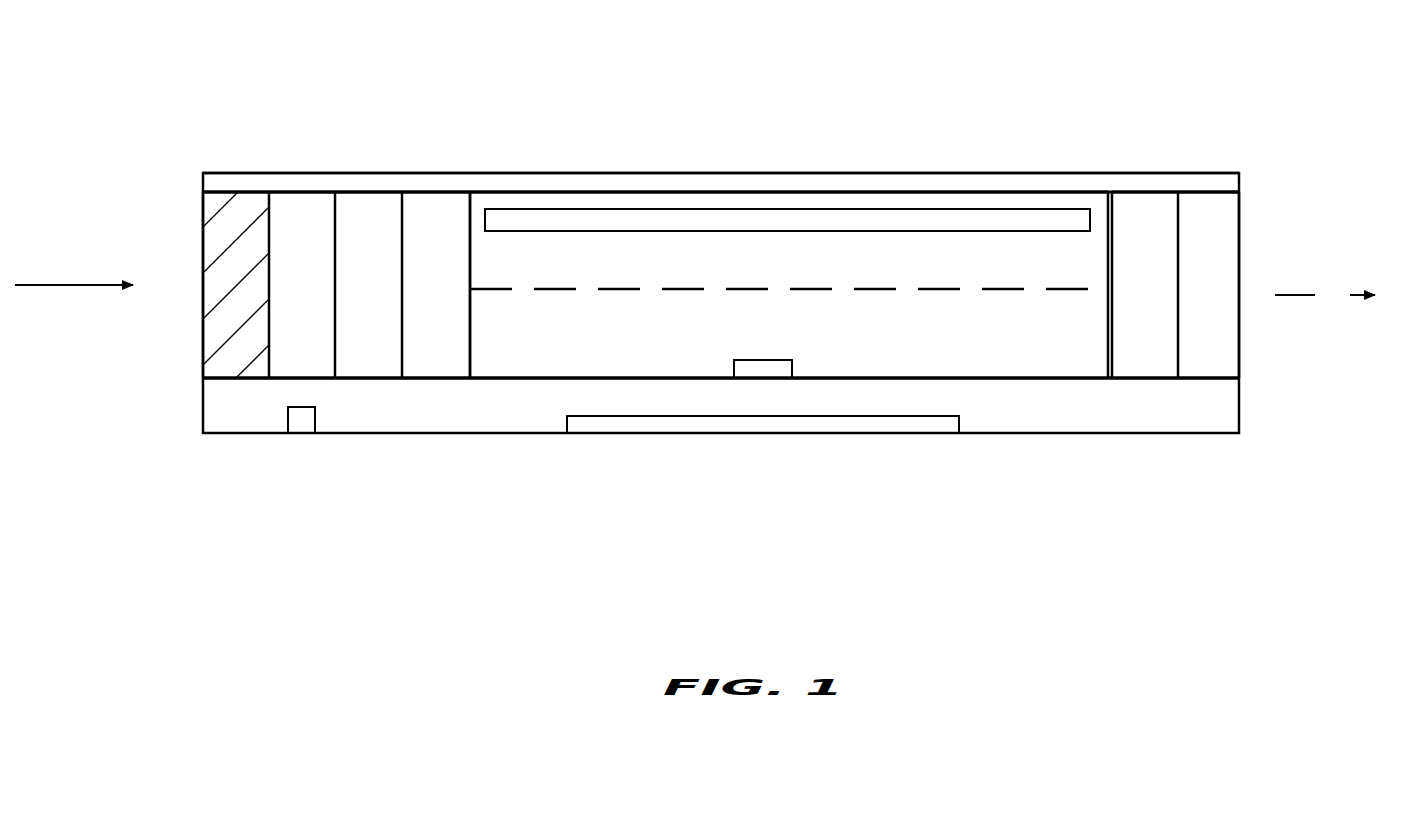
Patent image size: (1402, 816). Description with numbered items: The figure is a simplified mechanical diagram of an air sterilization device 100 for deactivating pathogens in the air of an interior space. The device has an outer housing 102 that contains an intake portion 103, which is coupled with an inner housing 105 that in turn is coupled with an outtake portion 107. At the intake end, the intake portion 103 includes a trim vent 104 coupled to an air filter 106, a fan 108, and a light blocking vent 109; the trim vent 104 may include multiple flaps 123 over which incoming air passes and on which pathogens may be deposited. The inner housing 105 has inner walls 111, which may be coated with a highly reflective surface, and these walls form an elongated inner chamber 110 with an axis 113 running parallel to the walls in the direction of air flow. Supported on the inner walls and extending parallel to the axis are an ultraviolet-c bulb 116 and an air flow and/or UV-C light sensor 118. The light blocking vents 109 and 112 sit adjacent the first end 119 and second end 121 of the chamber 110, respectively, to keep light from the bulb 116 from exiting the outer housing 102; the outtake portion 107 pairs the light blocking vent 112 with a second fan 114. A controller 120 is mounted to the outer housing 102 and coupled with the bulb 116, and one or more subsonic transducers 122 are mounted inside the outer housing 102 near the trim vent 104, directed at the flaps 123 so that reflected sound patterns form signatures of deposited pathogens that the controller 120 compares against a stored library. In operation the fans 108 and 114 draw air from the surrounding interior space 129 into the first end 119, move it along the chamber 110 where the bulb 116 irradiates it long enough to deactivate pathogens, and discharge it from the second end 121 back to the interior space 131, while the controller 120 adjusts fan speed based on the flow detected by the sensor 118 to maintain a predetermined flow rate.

The air sterilization device 100 is at (646, 51).
The outer housing 102 is at (710, 173).
The intake portion 103 is at (360, 125).
The trim vent 104 is at (222, 192).
The inner housing 105 is at (851, 141).
The air filter 106 is at (300, 192).
The outtake portion 107 is at (1115, 152).
The fan 108 is at (383, 192).
The light blocking vent 109 is at (448, 192).
The inner chamber 110 is at (888, 186).
The inner walls 111 is at (978, 206).
The light blocking vent 112 is at (1127, 192).
The axis 113 is at (735, 289).
The fan 114 is at (1212, 192).
The ultraviolet-c bulb 116 is at (585, 211).
The air flow and/or UV-C light sensor 118 is at (764, 362).
The first end 119 is at (471, 277).
The controller 120 is at (810, 435).
The second end 121 is at (1107, 262).
The subsonic transducer 122 is at (307, 427).
The flaps 123 is at (203, 322).
The interior space 129 is at (74, 285).
The interior space 131 is at (1325, 281).